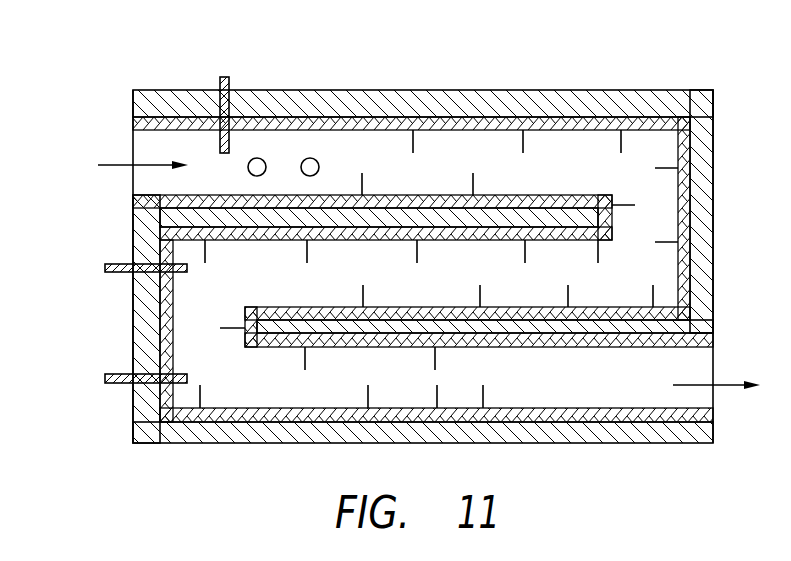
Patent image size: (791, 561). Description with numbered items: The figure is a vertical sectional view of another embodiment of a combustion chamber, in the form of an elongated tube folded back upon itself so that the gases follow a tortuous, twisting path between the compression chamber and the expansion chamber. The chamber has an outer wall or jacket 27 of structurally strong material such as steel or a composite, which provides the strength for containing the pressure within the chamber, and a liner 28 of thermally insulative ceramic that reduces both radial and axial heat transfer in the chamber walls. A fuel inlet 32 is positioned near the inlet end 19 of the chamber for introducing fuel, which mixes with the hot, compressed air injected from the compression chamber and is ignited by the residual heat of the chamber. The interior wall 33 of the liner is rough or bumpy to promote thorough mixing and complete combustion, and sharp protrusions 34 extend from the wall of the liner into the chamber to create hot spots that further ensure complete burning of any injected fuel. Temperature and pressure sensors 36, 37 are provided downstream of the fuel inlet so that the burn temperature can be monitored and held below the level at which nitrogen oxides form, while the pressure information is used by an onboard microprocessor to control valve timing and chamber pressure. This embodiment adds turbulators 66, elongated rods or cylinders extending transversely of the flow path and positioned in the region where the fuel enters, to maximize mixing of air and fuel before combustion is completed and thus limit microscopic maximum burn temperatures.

The inlet end 19 is at (147, 186).
The outer wall or jacket 27 is at (378, 100).
The liner 28 is at (262, 403).
The fuel inlet 32 is at (226, 77).
The interior wall 33 is at (582, 195).
The sharp protrusions 34 is at (665, 242).
The temperature sensor 36 is at (120, 264).
The pressure sensor 37 is at (120, 374).
The turbulators 66 is at (310, 158).